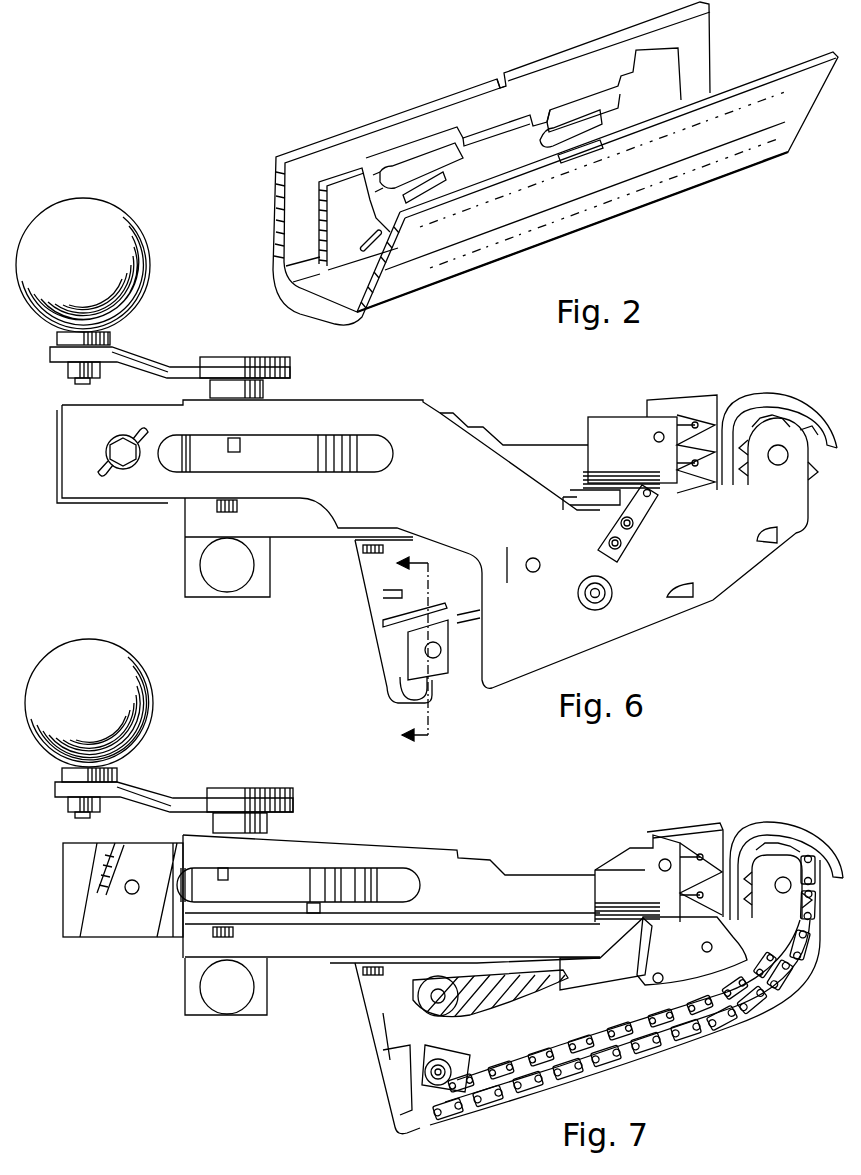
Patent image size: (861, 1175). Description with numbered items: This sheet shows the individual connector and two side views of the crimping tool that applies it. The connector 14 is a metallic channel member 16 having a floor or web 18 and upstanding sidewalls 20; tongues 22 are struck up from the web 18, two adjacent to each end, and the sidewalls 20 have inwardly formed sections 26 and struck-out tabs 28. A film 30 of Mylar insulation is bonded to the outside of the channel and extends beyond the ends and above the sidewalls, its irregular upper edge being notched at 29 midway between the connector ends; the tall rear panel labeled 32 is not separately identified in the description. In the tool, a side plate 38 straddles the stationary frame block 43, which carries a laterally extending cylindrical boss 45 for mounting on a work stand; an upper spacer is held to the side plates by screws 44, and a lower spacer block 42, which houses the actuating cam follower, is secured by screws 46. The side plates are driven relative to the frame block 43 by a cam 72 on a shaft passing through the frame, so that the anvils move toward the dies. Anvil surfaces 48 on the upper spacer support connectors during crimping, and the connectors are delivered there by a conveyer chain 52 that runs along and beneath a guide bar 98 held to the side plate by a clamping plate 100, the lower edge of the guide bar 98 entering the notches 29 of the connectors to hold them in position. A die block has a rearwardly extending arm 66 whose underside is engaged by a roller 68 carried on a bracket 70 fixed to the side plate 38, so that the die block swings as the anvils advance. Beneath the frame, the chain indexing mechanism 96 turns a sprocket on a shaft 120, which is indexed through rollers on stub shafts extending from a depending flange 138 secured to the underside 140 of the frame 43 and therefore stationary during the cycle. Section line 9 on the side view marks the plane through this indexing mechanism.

In FIG. 2, the individual connector 14 is at (316, 126).
In FIG. 2, the metallic channel member 16 is at (315, 252).
In FIG. 2, the floor or web 18 is at (318, 275).
In FIG. 2, the upstanding sidewalls 20 is at (357, 207).
In FIG. 2, the tongues 22 is at (378, 229).
In FIG. 2, the inwardly formed sections 26 is at (403, 163).
In FIG. 2, the tabs 28 is at (425, 175).
In FIG. 2, the notches 29 is at (490, 83).
In FIG. 2, the film of insulation 30 is at (330, 326).
In FIG. 2, the back wall 32 is at (700, 42).
In FIG. 6, the side plate 38 is at (743, 557).
In FIG. 7, the second spacer block 42 is at (62, 884).
In FIG. 7, the stationary frame block 43 is at (498, 896).
In FIG. 6, the screws 44 is at (778, 466).
In FIG. 6, the cylindrical boss 45 is at (238, 577).
In FIG. 7, the cylindrical boss 45 is at (238, 999).
In FIG. 6, the screws 46 is at (112, 452).
In FIG. 7, the anvil surface 48 is at (740, 850).
In FIG. 7, the conveyer chain 52 is at (660, 1040).
In FIG. 6, the rearwardly extending arm 66 is at (643, 455).
In FIG. 6, the rollers 68 is at (660, 497).
In FIG. 6, the brackets 70 is at (627, 545).
In FIG. 7, the cam 72 is at (278, 896).
In FIG. 7, the chain indexing mechanism 96 is at (411, 975).
In FIG. 7, the guide bar 98 is at (615, 975).
In FIG. 7, the clamping plate 100 is at (690, 952).
In FIG. 7, the shaft 120 is at (468, 1062).
In FIG. 6, the depending flange 138 is at (356, 575).
In FIG. 7, the depending flange 138 is at (356, 1000).
In FIG. 6, the underside of the frame 140 is at (336, 541).
In FIG. 7, the underside of the frame 140 is at (336, 963).
In FIG. 6, the section line 9 is at (403, 651).